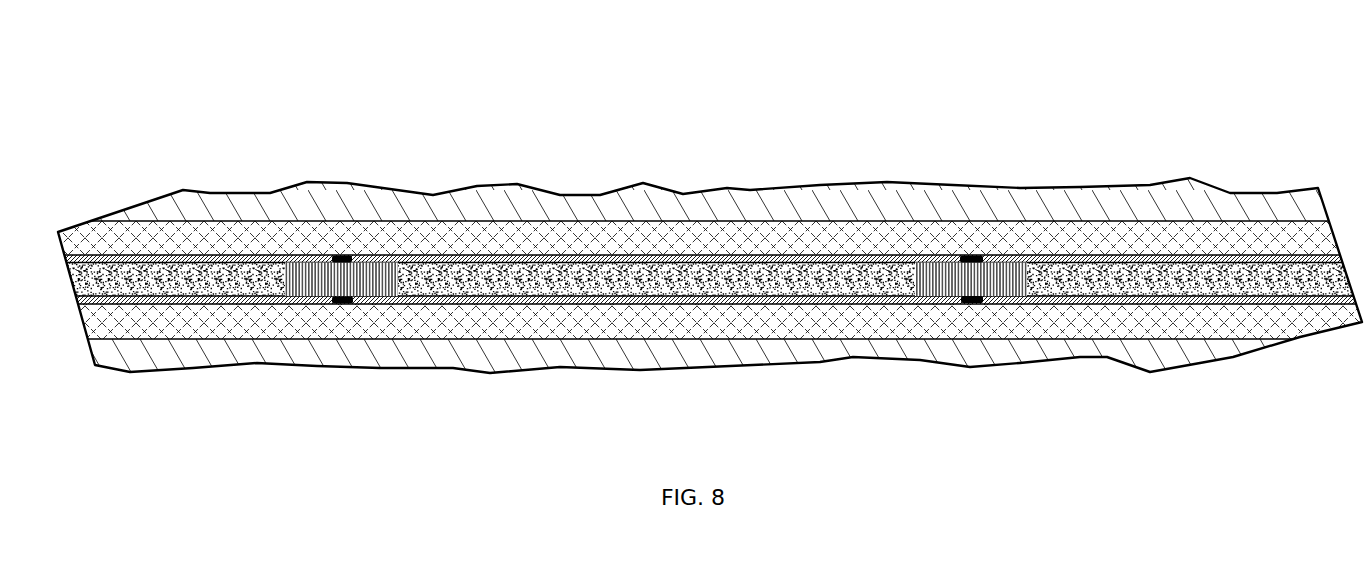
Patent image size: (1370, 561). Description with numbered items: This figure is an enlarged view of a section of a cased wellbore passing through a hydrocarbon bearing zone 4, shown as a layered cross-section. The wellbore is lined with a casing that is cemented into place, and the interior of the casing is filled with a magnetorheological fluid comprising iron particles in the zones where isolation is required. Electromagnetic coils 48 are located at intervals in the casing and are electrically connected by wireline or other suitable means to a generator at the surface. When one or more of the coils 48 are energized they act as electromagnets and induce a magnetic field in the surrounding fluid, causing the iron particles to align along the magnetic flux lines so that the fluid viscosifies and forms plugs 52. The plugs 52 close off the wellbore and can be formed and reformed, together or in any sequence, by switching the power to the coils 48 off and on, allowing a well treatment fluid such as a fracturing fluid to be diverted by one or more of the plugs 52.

The hydrocarbon bearing zone 4 is at (848, 212).
The electromagnetic coils 48 is at (340, 257).
The plugs 52 is at (292, 287).